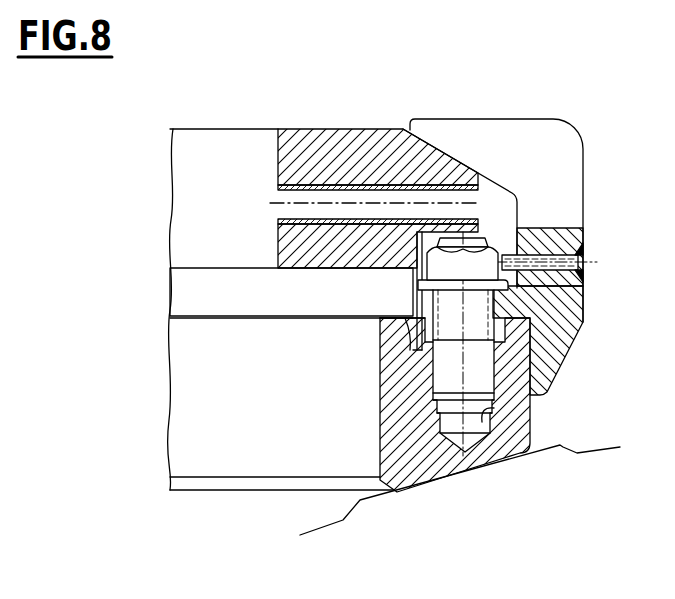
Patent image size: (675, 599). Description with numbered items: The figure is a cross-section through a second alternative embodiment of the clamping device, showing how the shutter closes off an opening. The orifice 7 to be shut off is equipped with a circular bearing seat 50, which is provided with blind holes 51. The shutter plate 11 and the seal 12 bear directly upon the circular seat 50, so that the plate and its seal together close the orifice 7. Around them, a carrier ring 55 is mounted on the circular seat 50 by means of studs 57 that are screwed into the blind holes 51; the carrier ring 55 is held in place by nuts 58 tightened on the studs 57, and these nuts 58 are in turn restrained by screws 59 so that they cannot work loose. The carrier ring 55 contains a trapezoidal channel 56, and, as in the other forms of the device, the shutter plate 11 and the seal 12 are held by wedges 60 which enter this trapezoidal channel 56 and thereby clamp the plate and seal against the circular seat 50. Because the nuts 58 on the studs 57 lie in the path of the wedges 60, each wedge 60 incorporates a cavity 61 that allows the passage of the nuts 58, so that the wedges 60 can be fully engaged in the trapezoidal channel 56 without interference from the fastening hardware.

The orifice 7 is at (183, 367).
The shutter plate 11 is at (188, 288).
The seal 12 is at (397, 358).
The circular bearing seat 50 is at (413, 463).
The blind holes 51 is at (485, 420).
The carrier ring 55 is at (547, 348).
The trapezoidal channel 56 is at (503, 197).
The studs 57 is at (477, 357).
The nuts 58 is at (483, 268).
The screws 59 is at (547, 258).
The wedges 60 is at (303, 142).
The cavity 61 is at (425, 225).